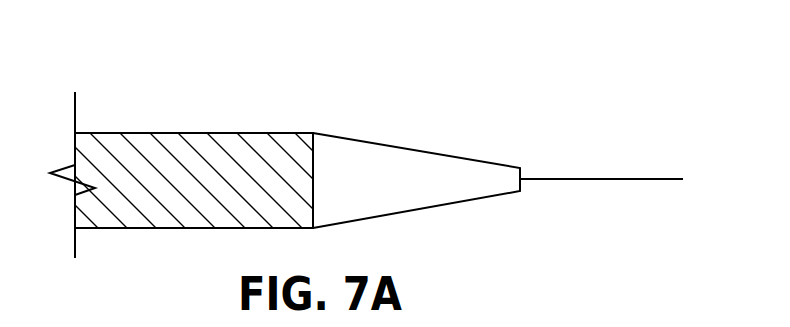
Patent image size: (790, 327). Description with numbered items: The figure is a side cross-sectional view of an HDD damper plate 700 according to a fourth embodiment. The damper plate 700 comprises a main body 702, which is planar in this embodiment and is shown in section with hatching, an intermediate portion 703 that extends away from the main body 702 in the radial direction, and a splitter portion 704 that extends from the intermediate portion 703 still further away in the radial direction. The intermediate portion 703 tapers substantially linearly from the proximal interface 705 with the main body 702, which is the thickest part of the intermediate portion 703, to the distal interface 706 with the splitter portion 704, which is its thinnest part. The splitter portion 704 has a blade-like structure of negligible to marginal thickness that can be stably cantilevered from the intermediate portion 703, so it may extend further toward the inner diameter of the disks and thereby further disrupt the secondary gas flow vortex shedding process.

The damper plate 700 is at (173, 61).
The main body 702 is at (236, 147).
The intermediate portion 703 is at (397, 156).
The splitter portion 704 is at (588, 179).
The proximal interface 705 is at (313, 192).
The distal interface 706 is at (522, 183).